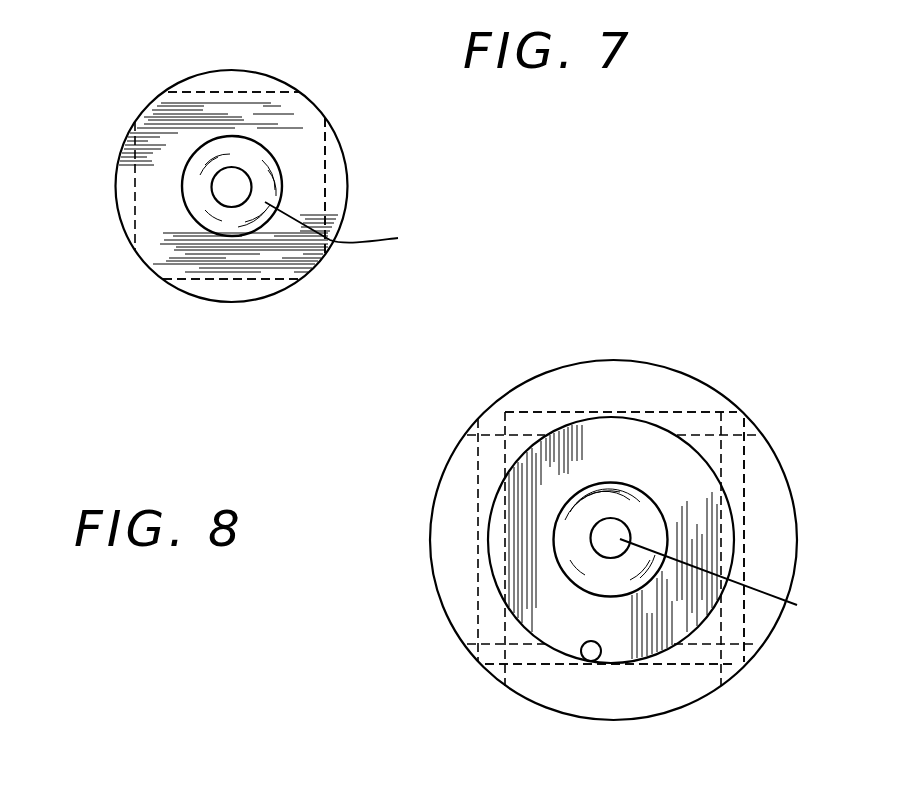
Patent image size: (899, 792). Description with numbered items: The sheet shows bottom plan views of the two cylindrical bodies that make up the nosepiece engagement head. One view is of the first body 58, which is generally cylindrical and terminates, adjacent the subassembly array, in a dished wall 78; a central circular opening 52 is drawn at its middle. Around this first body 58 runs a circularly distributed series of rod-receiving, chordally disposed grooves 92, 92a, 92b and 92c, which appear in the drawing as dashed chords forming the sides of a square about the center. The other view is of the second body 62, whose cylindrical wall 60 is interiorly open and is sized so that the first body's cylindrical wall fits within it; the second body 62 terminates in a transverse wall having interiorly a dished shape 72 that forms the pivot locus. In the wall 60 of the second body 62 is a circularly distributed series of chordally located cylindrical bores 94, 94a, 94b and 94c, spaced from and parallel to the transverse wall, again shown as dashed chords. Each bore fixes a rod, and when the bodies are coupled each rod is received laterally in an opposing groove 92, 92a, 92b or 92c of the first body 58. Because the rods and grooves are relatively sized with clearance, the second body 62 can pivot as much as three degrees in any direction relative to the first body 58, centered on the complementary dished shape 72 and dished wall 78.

In FIG. 7, the shaft opening 52 is at (237, 178).
In FIG. 8, the shaft opening 52 is at (605, 530).
In FIG. 7, the first body 58 is at (300, 95).
In FIG. 7, the cylindrical wall 60 is at (282, 293).
In FIG. 8, the cylindrical wall 60 is at (599, 660).
In FIG. 8, the second body 62 is at (718, 393).
In FIG. 8, the dished shape 72 is at (724, 580).
In FIG. 7, the dished wall 78 is at (348, 225).
In FIG. 7, the rod-receiving groove 92 is at (135, 182).
In FIG. 7, the rod-receiving groove 92a is at (213, 90).
In FIG. 7, the rod-receiving groove 92b is at (325, 172).
In FIG. 7, the rod-receiving groove 92c is at (237, 280).
In FIG. 8, the cylindrical bore 94 is at (490, 595).
In FIG. 8, the cylindrical bore 94a is at (566, 413).
In FIG. 8, the cylindrical bore 94b is at (733, 492).
In FIG. 8, the cylindrical bore 94c is at (679, 657).